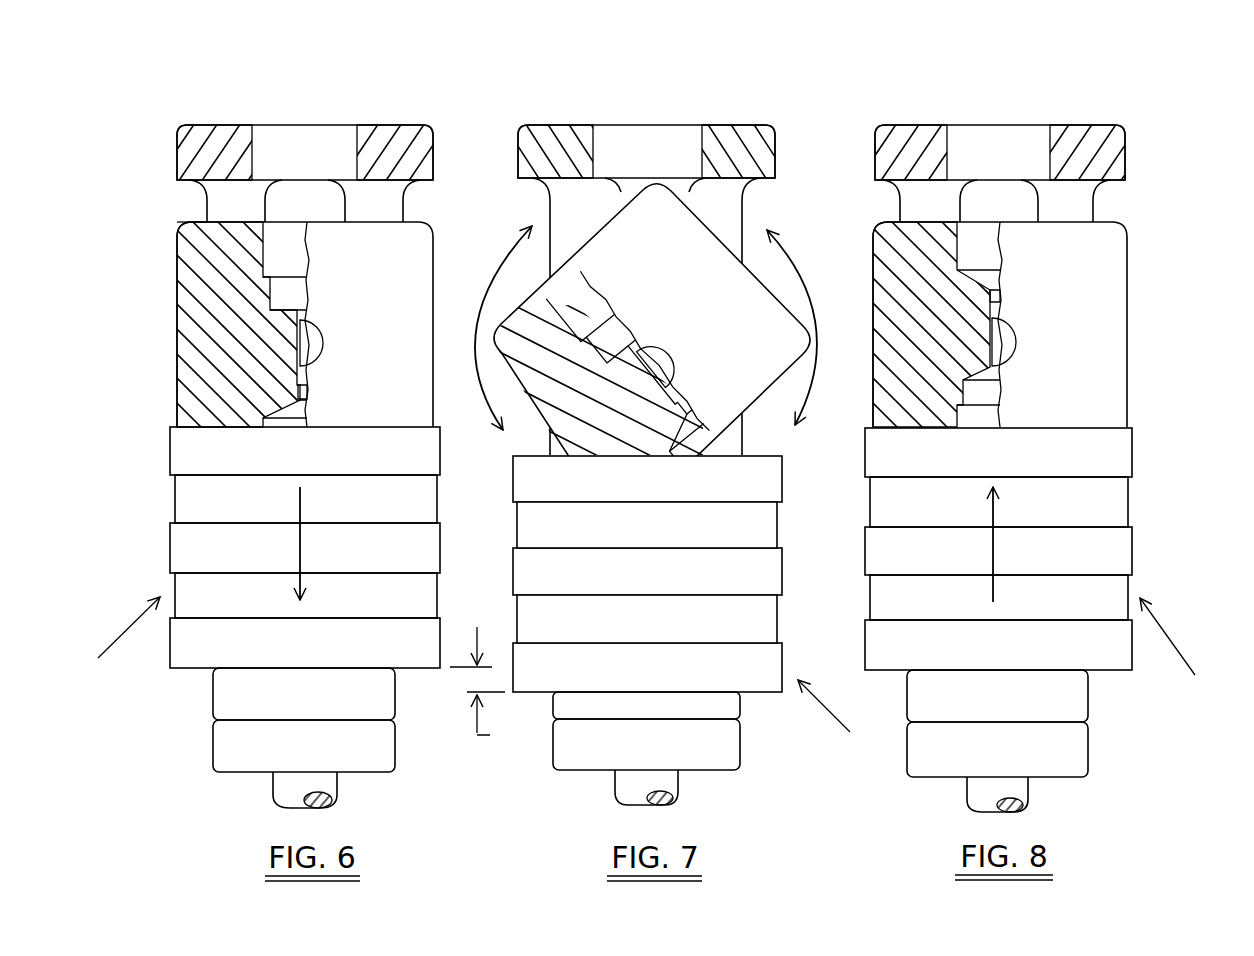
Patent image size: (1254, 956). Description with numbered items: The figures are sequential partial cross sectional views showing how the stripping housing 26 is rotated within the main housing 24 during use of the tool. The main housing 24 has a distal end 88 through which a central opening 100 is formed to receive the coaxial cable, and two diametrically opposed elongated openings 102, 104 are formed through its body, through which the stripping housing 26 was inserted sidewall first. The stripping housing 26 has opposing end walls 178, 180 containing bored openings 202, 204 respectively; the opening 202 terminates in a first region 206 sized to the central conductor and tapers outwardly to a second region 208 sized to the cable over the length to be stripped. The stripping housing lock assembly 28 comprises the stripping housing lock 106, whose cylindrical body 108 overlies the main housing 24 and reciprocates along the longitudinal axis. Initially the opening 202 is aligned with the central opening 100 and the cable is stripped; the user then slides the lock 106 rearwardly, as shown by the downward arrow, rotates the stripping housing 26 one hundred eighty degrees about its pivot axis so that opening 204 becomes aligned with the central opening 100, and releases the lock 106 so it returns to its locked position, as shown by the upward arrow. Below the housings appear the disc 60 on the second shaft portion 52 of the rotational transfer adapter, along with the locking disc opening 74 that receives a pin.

In FIG. 6, the main housing 24 is at (177, 121).
In FIG. 7, the main housing 24 is at (775, 122).
In FIG. 8, the main housing 24 is at (1122, 122).
In FIG. 6, the distal end 88 is at (197, 132).
In FIG. 7, the distal end 88 is at (540, 127).
In FIG. 8, the distal end 88 is at (893, 130).
In FIG. 6, the central opening 100 is at (328, 152).
In FIG. 7, the central opening 100 is at (668, 158).
In FIG. 8, the central opening 100 is at (1020, 152).
In FIG. 6, the elongated opening 102 is at (182, 213).
In FIG. 7, the elongated opening 102 is at (527, 182).
In FIG. 8, the elongated opening 102 is at (888, 182).
In FIG. 6, the elongated opening 104 is at (410, 197).
In FIG. 7, the elongated opening 104 is at (748, 197).
In FIG. 8, the elongated opening 104 is at (1100, 197).
In FIG. 6, the stripping housing 26 is at (414, 362).
In FIG. 7, the stripping housing 26 is at (778, 338).
In FIG. 8, the stripping housing 26 is at (1107, 315).
In FIG. 6, the end wall 180 is at (200, 221).
In FIG. 7, the end wall 180 is at (486, 322).
In FIG. 7, the end wall 178 is at (818, 311).
In FIG. 6, the bored opening 202 is at (290, 425).
In FIG. 7, the bored opening 202 is at (696, 428).
In FIG. 8, the bored opening 202 is at (964, 256).
In FIG. 6, the bored opening 204 is at (268, 253).
In FIG. 7, the bored opening 204 is at (573, 298).
In FIG. 8, the bored opening 204 is at (975, 415).
In FIG. 6, the first region 206 is at (296, 356).
In FIG. 8, the first region 206 is at (1005, 325).
In FIG. 6, the second region 208 is at (298, 416).
In FIG. 8, the second region 208 is at (990, 258).
In FIG. 6, the stripping housing lock 106 is at (197, 497).
In FIG. 7, the stripping housing lock 106 is at (535, 533).
In FIG. 8, the stripping housing lock 106 is at (1120, 495).
In FIG. 6, the cylindrical body 108 is at (352, 563).
In FIG. 7, the cylindrical body 108 is at (701, 588).
In FIG. 8, the cylindrical body 108 is at (1052, 563).
In FIG. 6, the stripping housing lock assembly 28 is at (114, 651).
In FIG. 7, the stripping housing lock assembly 28 is at (663, 693).
In FIG. 8, the stripping housing lock assembly 28 is at (1182, 651).
In FIG. 6, the disc 60 is at (218, 693).
In FIG. 7, the disc 60 is at (735, 700).
In FIG. 8, the disc 60 is at (1065, 690).
In FIG. 6, the opening 74 is at (218, 742).
In FIG. 7, the opening 74 is at (555, 745).
In FIG. 8, the opening 74 is at (1078, 742).
In FIG. 6, the second shaft portion 52 is at (332, 797).
In FIG. 7, the second shaft portion 52 is at (672, 792).
In FIG. 8, the second shaft portion 52 is at (1022, 790).